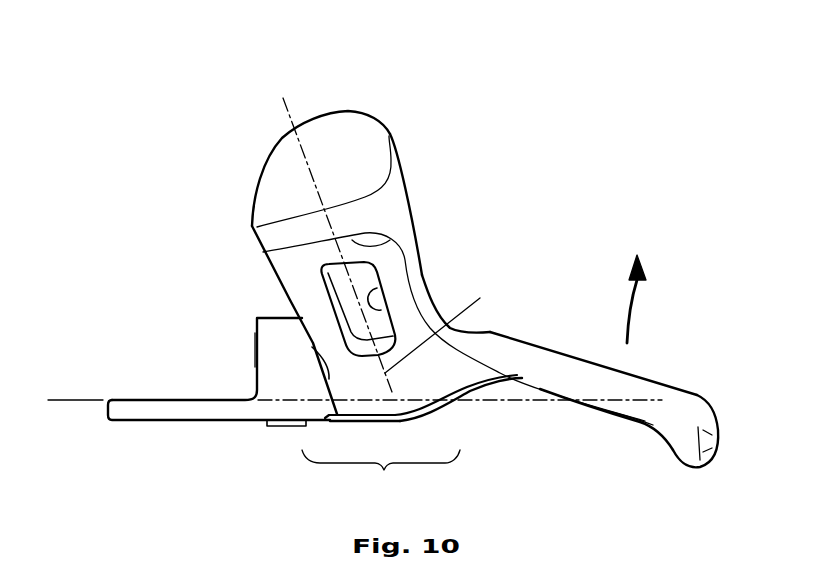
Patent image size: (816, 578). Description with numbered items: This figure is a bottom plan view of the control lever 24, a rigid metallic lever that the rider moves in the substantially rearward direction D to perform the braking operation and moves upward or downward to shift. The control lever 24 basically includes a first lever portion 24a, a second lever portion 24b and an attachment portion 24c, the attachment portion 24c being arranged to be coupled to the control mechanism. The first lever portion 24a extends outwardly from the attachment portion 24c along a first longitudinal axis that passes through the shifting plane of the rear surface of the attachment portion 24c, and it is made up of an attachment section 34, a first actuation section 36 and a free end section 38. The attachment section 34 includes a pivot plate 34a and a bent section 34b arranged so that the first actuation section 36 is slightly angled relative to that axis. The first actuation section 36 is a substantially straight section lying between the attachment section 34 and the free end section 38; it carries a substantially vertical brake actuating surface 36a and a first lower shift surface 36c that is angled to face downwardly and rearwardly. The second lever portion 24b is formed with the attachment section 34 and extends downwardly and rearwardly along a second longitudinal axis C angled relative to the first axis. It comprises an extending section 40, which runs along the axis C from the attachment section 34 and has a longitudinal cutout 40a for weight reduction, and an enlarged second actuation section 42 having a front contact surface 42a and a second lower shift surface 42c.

The control lever 24 is at (393, 80).
The first lever portion 24a is at (552, 326).
The second lever portion 24b is at (420, 163).
The attachment portion 24c is at (165, 388).
The second actuation section 42 is at (399, 127).
The front contact surface 42a is at (390, 240).
The second lower shift surface 42c is at (362, 169).
The extending section 40 is at (432, 249).
The longitudinal cutout 40a is at (383, 306).
The attachment section 34 is at (381, 475).
The pivot plate 34a is at (304, 406).
The bent section 34b is at (437, 387).
The first actuation section 36 is at (567, 419).
The brake actuating surface 36a is at (612, 414).
The first lower shift surface 36c is at (580, 379).
The free end section 38 is at (676, 470).
The second longitudinal axis C is at (443, 329).
The rearward direction D is at (641, 295).